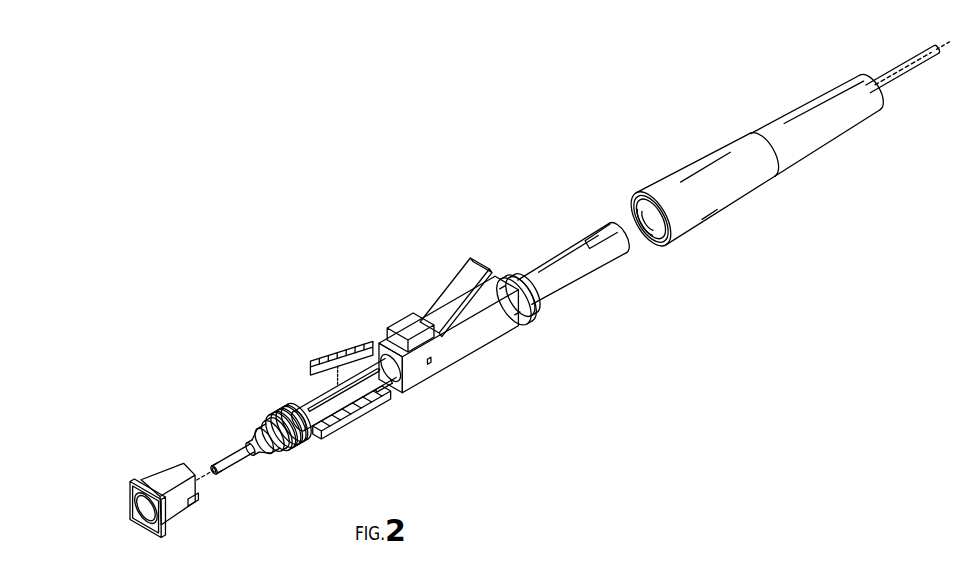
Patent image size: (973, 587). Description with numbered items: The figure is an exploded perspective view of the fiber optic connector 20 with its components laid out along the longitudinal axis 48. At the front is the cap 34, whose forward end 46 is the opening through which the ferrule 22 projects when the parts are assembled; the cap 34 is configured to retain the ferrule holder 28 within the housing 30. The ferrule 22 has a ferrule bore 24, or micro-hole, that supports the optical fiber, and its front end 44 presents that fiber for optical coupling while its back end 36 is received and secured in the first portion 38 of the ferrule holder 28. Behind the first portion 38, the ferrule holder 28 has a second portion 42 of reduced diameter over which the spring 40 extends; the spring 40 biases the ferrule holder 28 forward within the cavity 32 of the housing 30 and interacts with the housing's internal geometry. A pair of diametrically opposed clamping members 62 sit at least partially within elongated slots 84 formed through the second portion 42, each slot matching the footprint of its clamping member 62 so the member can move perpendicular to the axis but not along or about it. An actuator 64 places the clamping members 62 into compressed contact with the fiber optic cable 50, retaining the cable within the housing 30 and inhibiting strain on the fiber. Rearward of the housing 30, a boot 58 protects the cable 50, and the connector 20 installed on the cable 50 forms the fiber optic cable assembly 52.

The connector 20 is at (300, 223).
The ferrule 22 is at (236, 452).
The ferrule bore 24 is at (216, 475).
The ferrule holder 28 is at (387, 397).
The housing 30 is at (470, 345).
The cavity 32 is at (404, 394).
The cap 34 is at (167, 478).
The back end 36 is at (253, 433).
The first portion 38 is at (271, 455).
The spring 40 is at (279, 407).
The second portion 42 is at (308, 400).
The front end 44 is at (211, 463).
The forward end 46 is at (138, 512).
The longitudinal axis 48 is at (142, 515).
The fiber optic cable 50 is at (887, 90).
The fiber optic cable assembly 52 is at (751, 228).
The boot 58 is at (707, 156).
The clamping member 62 is at (352, 343).
The actuator 64 is at (549, 253).
The elongated slot 84 is at (377, 401).